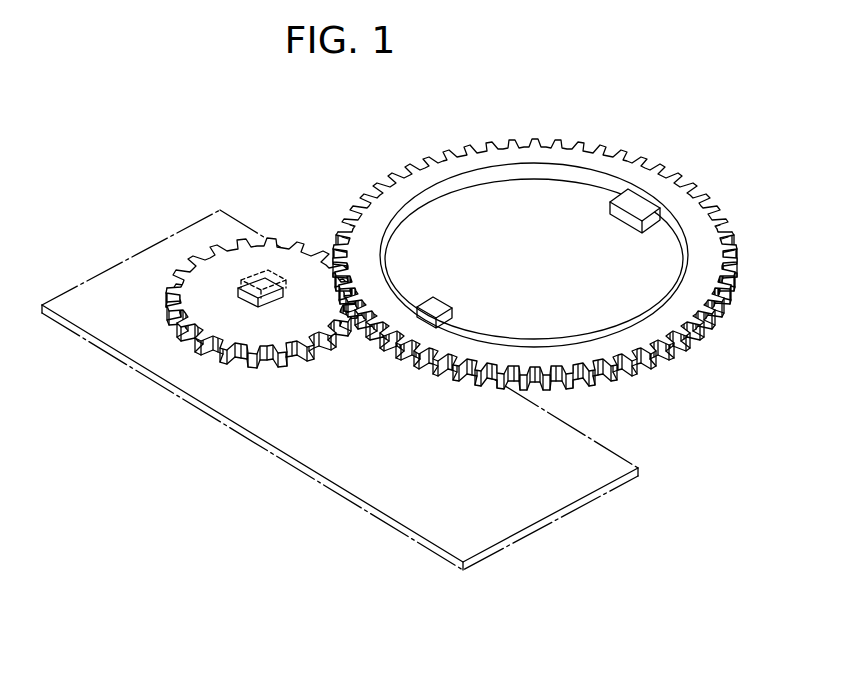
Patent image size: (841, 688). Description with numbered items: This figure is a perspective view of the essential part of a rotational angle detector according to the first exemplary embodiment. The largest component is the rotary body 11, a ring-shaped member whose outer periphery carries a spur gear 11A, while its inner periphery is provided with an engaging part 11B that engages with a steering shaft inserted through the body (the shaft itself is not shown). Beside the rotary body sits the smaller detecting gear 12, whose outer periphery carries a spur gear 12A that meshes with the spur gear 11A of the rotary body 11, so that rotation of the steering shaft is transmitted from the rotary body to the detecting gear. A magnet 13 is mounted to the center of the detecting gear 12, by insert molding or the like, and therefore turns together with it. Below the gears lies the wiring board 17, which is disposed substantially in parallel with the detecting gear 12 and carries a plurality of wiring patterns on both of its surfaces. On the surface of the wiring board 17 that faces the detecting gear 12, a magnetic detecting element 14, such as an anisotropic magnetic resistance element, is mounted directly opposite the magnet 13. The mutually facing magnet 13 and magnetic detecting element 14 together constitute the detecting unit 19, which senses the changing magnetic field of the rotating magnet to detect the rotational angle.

The rotary body 11 is at (536, 158).
The spur gear 11A is at (657, 360).
The engaging part 11B is at (622, 217).
The detecting gear 12 is at (222, 272).
The spur gear 12A is at (297, 250).
The magnet 13 is at (257, 308).
The magnetic detecting element 14 is at (235, 288).
The wiring board 17 is at (467, 517).
The detecting unit 19 is at (174, 389).